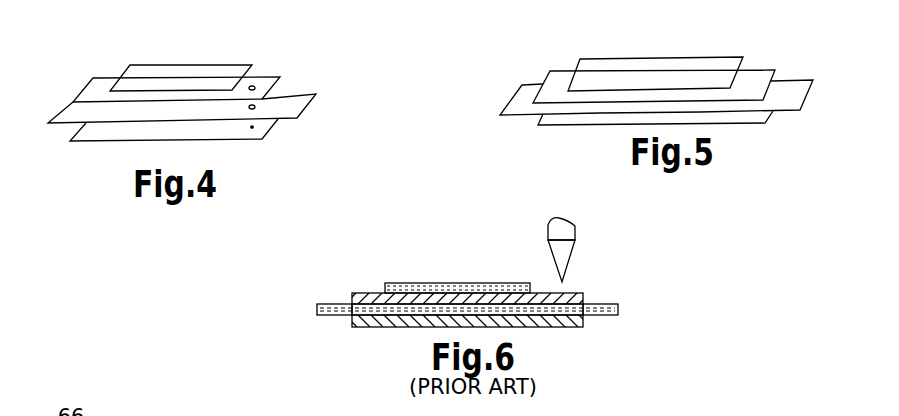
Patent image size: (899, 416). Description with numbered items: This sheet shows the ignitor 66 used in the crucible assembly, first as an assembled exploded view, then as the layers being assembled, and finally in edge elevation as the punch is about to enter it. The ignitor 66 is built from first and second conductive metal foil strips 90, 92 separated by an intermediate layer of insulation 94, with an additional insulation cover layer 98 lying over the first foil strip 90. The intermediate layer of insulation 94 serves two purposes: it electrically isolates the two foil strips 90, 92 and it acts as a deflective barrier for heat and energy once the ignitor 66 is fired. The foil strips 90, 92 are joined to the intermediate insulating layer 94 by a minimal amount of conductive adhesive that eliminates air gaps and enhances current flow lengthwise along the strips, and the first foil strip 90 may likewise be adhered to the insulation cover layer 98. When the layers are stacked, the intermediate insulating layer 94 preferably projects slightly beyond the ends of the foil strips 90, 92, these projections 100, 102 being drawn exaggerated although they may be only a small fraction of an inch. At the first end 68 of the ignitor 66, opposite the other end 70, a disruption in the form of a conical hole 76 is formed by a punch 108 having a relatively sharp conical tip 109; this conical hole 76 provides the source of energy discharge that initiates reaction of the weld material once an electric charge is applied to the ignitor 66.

In FIG. 4, the ignitor 66 is at (122, 57).
In FIG. 6, the ignitor 66 is at (418, 258).
In FIG. 4, the first end 68 is at (302, 123).
In FIG. 6, the first end 68 is at (582, 277).
In FIG. 4, the first end of strip 70 is at (63, 137).
In FIG. 6, the first end of strip 70 is at (302, 292).
In FIG. 4, the conical hole 76 is at (270, 75).
In FIG. 4, the first conductive metal foil strip 90 is at (93, 87).
In FIG. 5, the first conductive metal foil strip 90 is at (767, 72).
In FIG. 6, the first conductive metal foil strip 90 is at (355, 293).
In FIG. 4, the second conductive metal foil strip 92 is at (208, 138).
In FIG. 5, the second conductive metal foil strip 92 is at (612, 125).
In FIG. 6, the second conductive metal foil strip 92 is at (395, 327).
In FIG. 4, the intermediate layer of insulation 94 is at (293, 95).
In FIG. 5, the intermediate layer of insulation 94 is at (800, 87).
In FIG. 6, the intermediate layer of insulation 94 is at (332, 316).
In FIG. 4, the insulation cover layer 98 is at (177, 70).
In FIG. 5, the insulation cover layer 98 is at (615, 73).
In FIG. 6, the insulation cover layer 98 is at (483, 282).
In FIG. 5, the projection 100 is at (522, 95).
In FIG. 6, the projection 100 is at (328, 303).
In FIG. 5, the projection 102 is at (797, 98).
In FIG. 6, the projection 102 is at (608, 299).
In FIG. 6, the punch 108 is at (578, 223).
In FIG. 6, the conical tip 109 is at (560, 252).